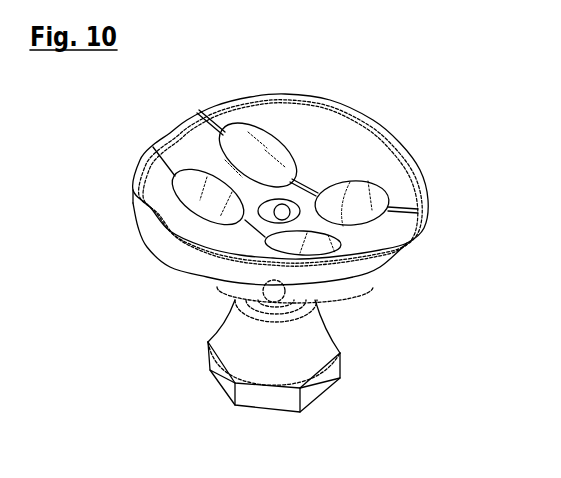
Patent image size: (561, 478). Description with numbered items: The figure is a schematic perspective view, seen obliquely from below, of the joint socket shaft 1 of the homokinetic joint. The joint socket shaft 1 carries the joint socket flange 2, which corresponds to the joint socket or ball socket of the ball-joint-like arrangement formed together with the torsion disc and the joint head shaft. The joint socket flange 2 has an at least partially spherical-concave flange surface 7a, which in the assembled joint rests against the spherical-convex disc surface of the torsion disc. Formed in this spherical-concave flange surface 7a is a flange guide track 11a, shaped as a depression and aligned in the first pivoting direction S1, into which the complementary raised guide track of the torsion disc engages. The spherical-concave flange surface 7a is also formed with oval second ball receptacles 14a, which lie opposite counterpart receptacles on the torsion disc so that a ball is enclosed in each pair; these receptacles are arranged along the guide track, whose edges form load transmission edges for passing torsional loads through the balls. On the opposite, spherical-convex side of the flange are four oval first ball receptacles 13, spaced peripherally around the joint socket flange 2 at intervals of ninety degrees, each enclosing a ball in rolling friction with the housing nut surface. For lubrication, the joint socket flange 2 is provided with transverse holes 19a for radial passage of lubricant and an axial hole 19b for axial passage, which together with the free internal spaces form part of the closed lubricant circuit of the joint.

The joint socket shaft 1 is at (103, 273).
The joint socket flange 2 is at (137, 177).
The spherical-concave flange surface 7a is at (362, 162).
The flange guide track 11a is at (185, 139).
The first ball receptacle 13 is at (203, 268).
The second ball receptacle 14a is at (245, 138).
The transverse hole 19a is at (283, 290).
The axial hole 19b is at (295, 212).
The first pivoting direction S1 is at (374, 234).